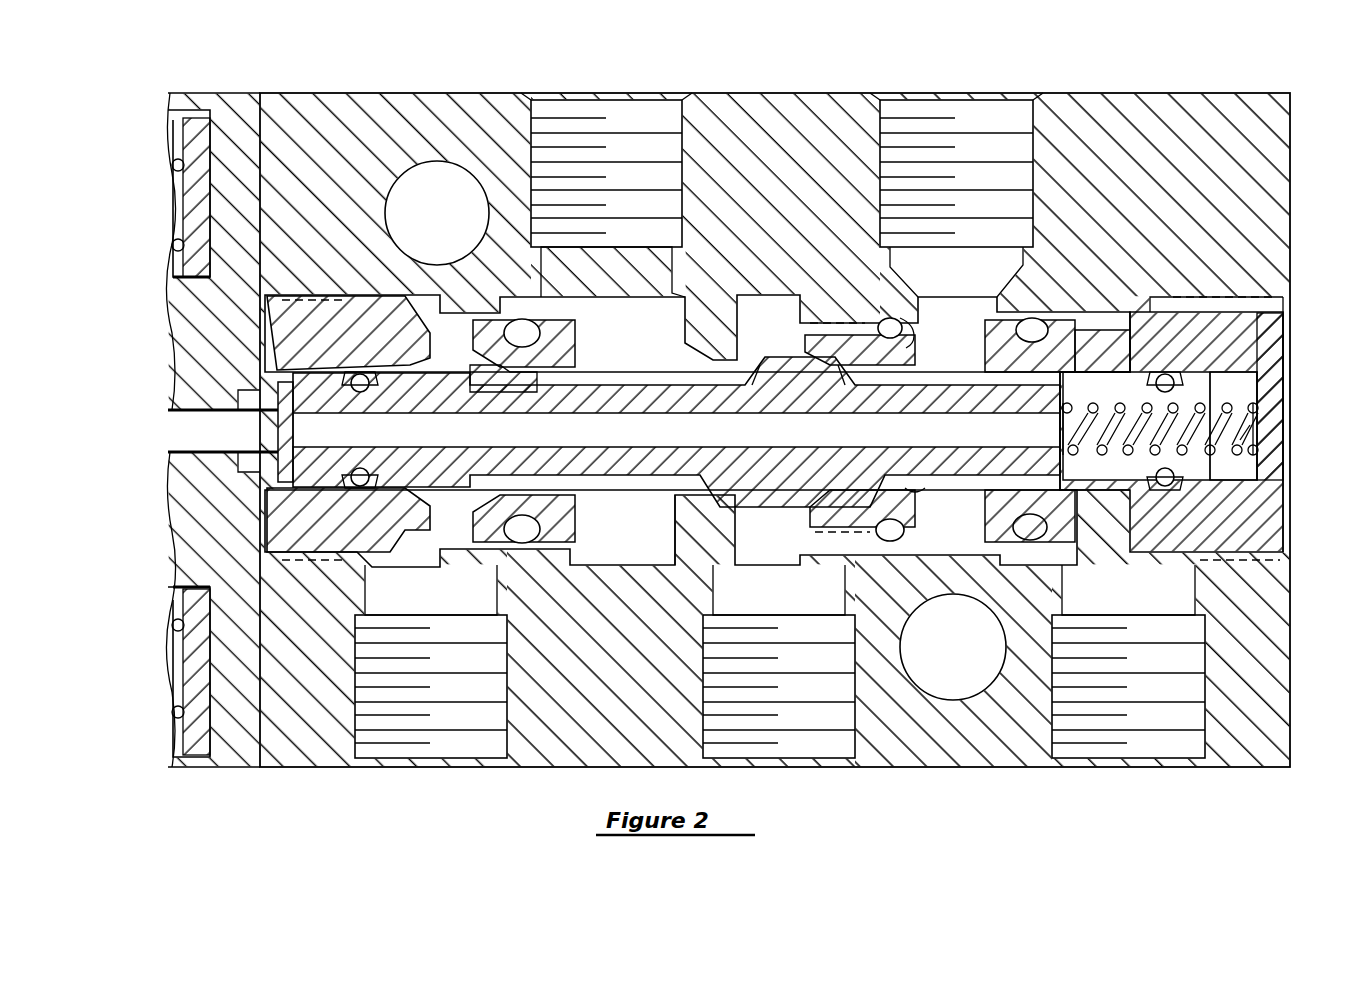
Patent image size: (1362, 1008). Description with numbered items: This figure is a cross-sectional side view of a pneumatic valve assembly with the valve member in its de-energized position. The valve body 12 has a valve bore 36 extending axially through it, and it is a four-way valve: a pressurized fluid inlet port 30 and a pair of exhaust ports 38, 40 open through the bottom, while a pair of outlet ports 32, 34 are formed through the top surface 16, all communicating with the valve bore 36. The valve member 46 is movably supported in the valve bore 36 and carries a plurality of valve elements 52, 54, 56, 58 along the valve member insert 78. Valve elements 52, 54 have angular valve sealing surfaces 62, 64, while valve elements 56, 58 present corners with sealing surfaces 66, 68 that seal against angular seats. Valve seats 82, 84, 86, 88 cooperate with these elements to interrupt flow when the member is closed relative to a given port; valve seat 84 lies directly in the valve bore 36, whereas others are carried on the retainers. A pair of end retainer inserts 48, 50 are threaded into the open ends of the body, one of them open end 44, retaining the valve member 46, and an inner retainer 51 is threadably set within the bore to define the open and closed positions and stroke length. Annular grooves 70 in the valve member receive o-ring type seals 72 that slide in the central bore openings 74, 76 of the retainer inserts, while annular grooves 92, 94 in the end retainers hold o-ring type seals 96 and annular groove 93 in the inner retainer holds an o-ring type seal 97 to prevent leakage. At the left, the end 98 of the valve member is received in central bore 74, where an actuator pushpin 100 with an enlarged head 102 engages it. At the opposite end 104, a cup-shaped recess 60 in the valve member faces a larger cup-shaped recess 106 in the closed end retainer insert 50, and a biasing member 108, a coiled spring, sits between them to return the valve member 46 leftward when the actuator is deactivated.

The valve body 12 is at (908, 68).
The top surface 16 is at (1136, 116).
The pressurized fluid inlet port 30 is at (844, 685).
The outlet port 32 is at (1019, 172).
The outlet port 34 is at (670, 172).
The valve bore 36 is at (648, 521).
The exhaust port 38 is at (1194, 685).
The exhaust port 40 is at (494, 685).
The open end 44 is at (1290, 548).
The valve member 46 is at (605, 378).
The end retainer insert 48 is at (354, 348).
The end retainer insert 50 is at (1219, 353).
The inner retainer 51 is at (794, 530).
The valve element 52 is at (827, 385).
The valve element 54 is at (754, 385).
The valve element 56 is at (487, 389).
The valve element 58 is at (1102, 379).
The cup-shaped recess 60 is at (1102, 480).
The angular valve sealing surface 62 is at (850, 370).
The angular valve sealing surface 64 is at (696, 496).
The angular valve sealing surface 66 is at (496, 360).
The angular valve sealing surface 68 is at (926, 491).
The annular groove 70 is at (381, 491).
The o-ring type seal 72 is at (362, 392).
The central bore opening 74 is at (421, 488).
The central bore opening 76 is at (1278, 330).
The valve member insert 78 is at (648, 393).
The valve seat 82 is at (833, 489).
The valve seat 84 is at (748, 373).
The valve seat 86 is at (510, 489).
The valve seat 88 is at (1069, 348).
The annular groove 92 is at (906, 522).
The annular groove 93 is at (908, 342).
The annular groove 94 is at (546, 533).
The o-ring type seal 96 is at (521, 331).
The o-ring type seal 97 is at (894, 330).
The end 98 is at (300, 453).
The actuator pushpin 100 is at (214, 445).
The enlarged head 102 is at (280, 425).
The opposite end 104 is at (1163, 472).
The cup-shaped recess 106 is at (1258, 382).
The biasing member 108 is at (1248, 426).